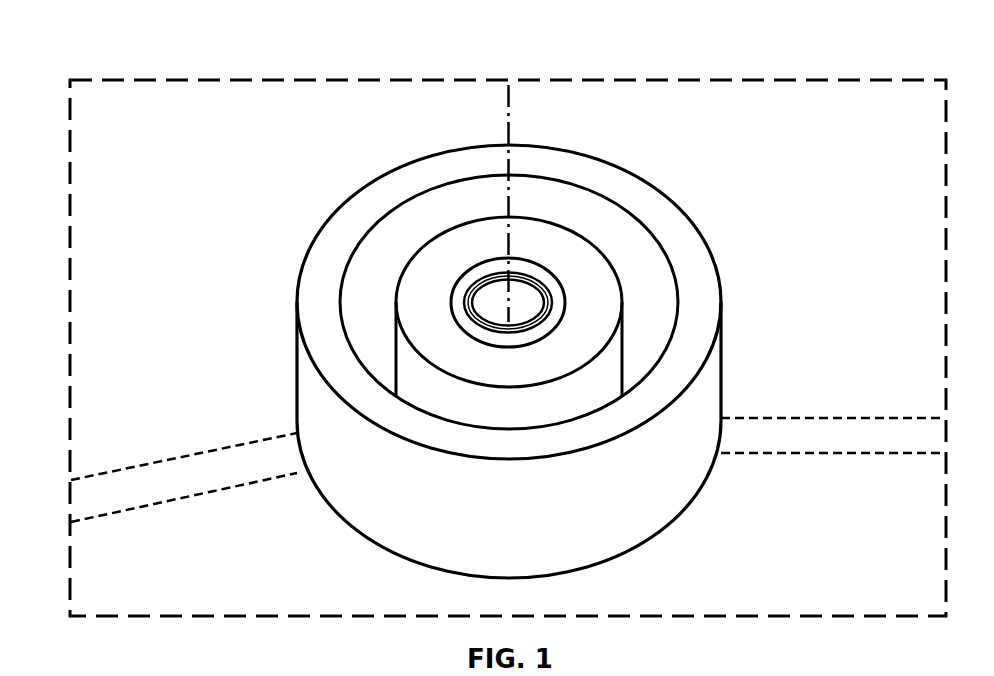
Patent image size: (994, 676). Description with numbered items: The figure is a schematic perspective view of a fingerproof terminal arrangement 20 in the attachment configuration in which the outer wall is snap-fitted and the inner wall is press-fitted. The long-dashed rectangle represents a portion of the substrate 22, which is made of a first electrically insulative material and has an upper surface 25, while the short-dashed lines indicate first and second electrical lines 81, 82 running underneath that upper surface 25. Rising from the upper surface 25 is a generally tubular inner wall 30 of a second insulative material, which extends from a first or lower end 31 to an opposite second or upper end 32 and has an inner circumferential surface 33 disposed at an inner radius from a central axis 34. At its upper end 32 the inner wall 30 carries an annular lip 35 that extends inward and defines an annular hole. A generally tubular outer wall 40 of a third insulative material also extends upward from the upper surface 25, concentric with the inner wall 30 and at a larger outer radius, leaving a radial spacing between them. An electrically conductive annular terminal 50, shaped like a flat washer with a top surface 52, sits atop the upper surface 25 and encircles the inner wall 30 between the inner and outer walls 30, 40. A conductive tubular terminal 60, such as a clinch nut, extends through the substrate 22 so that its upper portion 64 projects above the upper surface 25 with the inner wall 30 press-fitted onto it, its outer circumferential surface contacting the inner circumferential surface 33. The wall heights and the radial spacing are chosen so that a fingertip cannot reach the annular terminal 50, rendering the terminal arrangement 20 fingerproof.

The terminal arrangement 20 is at (173, 69).
The substrate 22 is at (502, 369).
The upper surface 25 is at (236, 176).
The inner wall 30 is at (548, 252).
The first end 31 is at (345, 498).
The second end 32 is at (350, 420).
The inner circumferential surface 33 is at (375, 250).
The central axis 34 is at (507, 130).
The annular lip 35 is at (550, 288).
The outer wall 40 is at (687, 248).
The annular terminal 50 is at (406, 302).
The top surface 52 is at (373, 320).
The tubular terminal 60 is at (670, 324).
The upper portion 64 is at (543, 300).
The first electrical line 81 is at (212, 463).
The second electrical line 82 is at (812, 437).